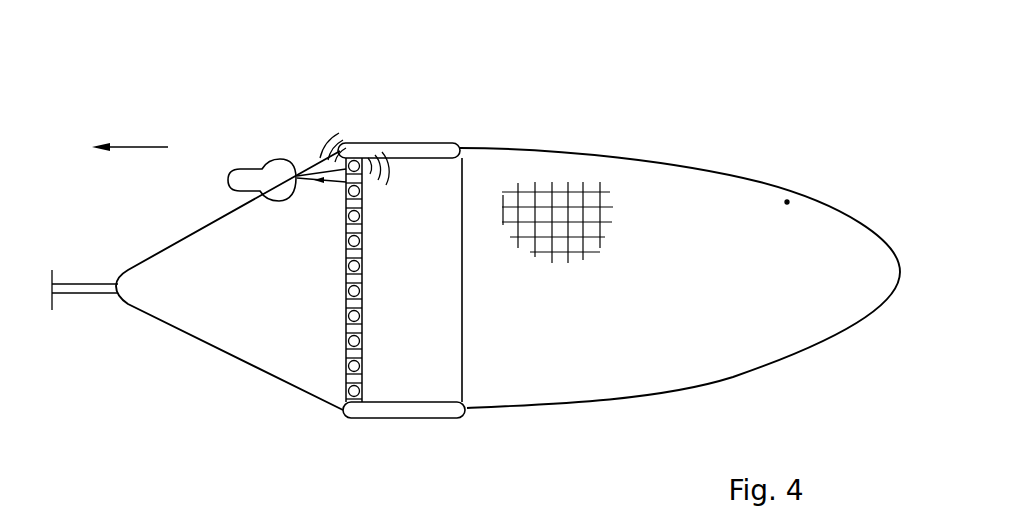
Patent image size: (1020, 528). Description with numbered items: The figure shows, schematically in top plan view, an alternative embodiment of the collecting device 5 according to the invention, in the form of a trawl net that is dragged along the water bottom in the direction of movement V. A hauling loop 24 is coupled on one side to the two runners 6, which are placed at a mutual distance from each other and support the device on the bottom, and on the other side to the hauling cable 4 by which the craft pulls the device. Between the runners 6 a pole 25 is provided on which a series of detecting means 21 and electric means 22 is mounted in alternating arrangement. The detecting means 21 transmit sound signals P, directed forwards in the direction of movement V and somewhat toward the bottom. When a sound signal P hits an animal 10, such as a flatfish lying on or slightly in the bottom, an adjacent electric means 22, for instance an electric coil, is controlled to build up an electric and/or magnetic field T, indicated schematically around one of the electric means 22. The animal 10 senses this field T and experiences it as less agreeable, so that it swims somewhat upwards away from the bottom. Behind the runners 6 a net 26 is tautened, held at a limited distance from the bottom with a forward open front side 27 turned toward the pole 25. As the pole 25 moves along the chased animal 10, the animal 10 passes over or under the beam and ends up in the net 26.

The hauling cable 4 is at (83, 284).
The collecting device 5 is at (710, 157).
The runners 6 is at (426, 143).
The animal 10 is at (242, 169).
The detecting means 21 is at (364, 178).
The electric means 22 is at (352, 163).
The hauling loop 24 is at (170, 243).
The pole 25 is at (336, 296).
The net 26 is at (788, 200).
The forward open front side 27 is at (452, 335).
The direction of movement V is at (138, 147).
The electric and/or magnetic field T is at (315, 152).
The sound signal P is at (306, 182).